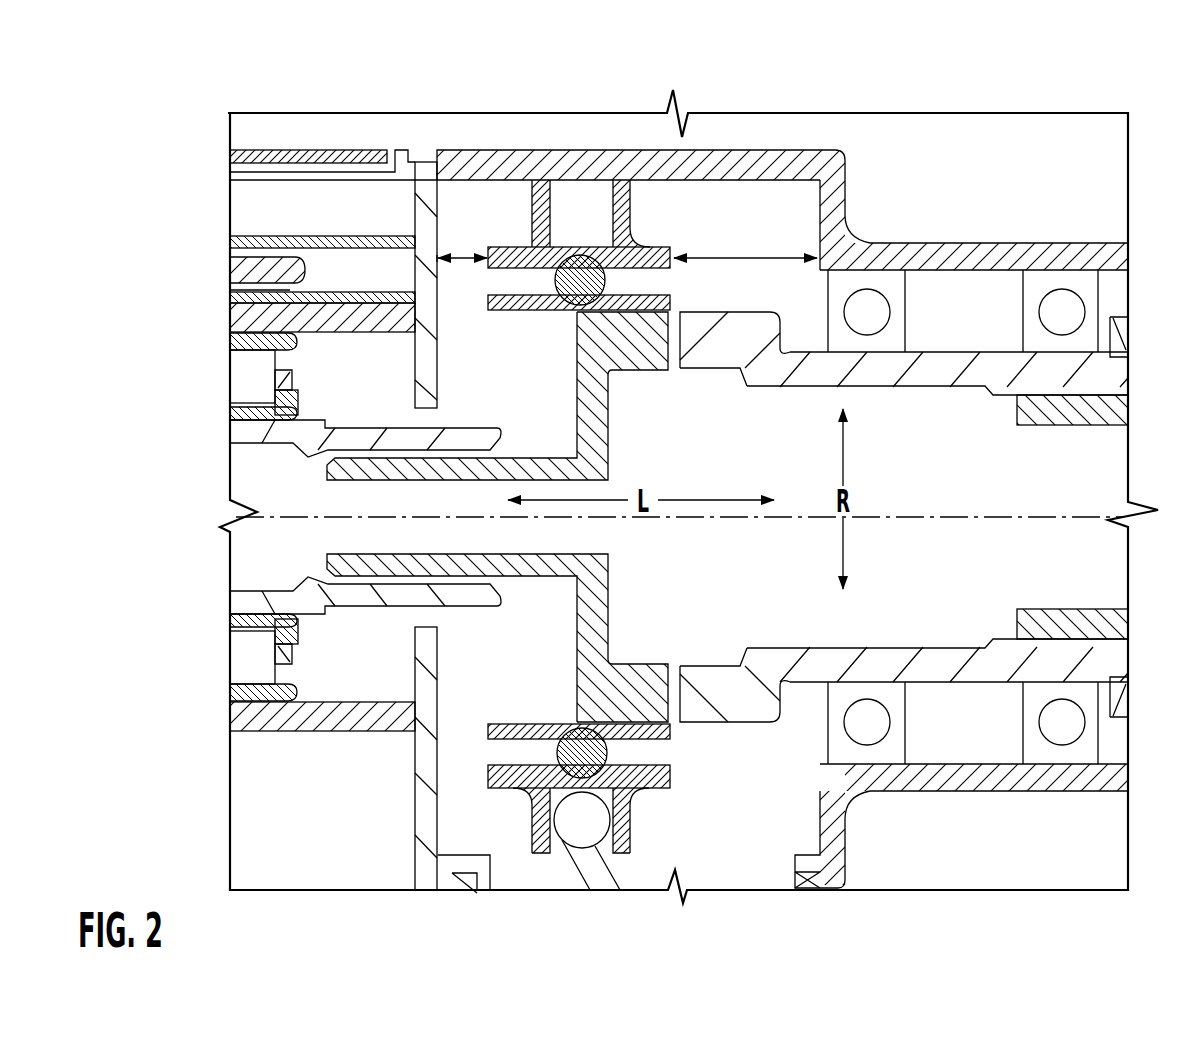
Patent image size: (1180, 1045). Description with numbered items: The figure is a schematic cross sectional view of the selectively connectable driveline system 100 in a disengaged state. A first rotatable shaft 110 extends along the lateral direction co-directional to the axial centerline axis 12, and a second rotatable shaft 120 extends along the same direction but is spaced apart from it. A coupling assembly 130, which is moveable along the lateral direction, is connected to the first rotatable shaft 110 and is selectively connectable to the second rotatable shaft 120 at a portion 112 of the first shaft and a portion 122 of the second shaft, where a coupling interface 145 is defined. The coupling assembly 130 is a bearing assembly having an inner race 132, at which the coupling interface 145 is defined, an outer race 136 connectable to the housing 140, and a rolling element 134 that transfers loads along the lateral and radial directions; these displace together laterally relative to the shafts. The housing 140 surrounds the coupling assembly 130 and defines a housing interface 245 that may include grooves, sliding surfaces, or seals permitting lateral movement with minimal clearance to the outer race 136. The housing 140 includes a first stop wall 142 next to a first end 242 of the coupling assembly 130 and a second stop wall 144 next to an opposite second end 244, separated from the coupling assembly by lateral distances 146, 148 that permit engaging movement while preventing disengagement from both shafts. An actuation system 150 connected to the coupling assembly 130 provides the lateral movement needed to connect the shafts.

The selectively connectable driveline system 100 is at (746, 100).
The axial centerline axis 12 is at (947, 512).
The first rotatable shaft 110 is at (762, 378).
The portion of the first rotatable shaft 112 is at (748, 306).
The second rotatable shaft 120 is at (632, 362).
The portion of the second rotatable shaft 122 is at (620, 325).
The coupling assembly 130 is at (624, 211).
The inner race 132 is at (672, 302).
The rolling element 134 is at (604, 281).
The outer race 136 is at (652, 247).
The housing 140 is at (686, 162).
The first stop wall 142 is at (425, 207).
The second stop wall 144 is at (833, 200).
The coupling interface 145 is at (567, 712).
The lateral distance 146 is at (462, 262).
The lateral distance 148 is at (787, 257).
The actuation system 150 is at (602, 883).
The first end of the coupling assembly 242 is at (482, 249).
The second end of the coupling assembly 244 is at (692, 254).
The housing interface 245 is at (640, 186).